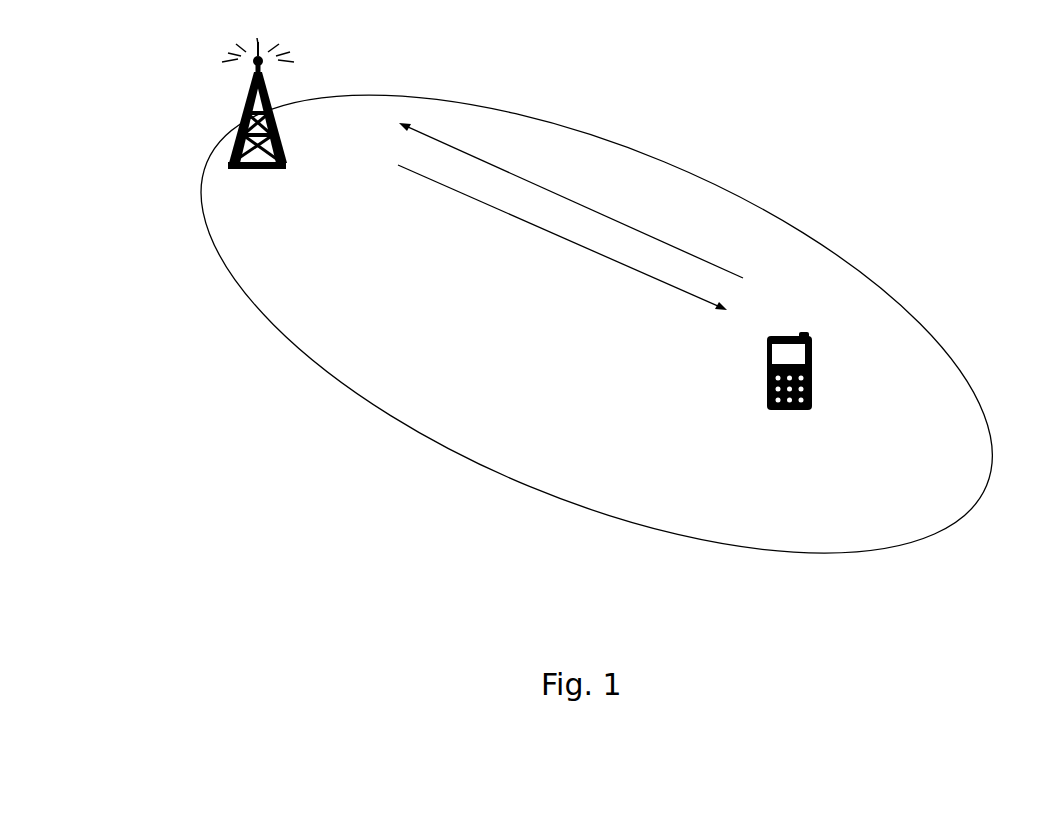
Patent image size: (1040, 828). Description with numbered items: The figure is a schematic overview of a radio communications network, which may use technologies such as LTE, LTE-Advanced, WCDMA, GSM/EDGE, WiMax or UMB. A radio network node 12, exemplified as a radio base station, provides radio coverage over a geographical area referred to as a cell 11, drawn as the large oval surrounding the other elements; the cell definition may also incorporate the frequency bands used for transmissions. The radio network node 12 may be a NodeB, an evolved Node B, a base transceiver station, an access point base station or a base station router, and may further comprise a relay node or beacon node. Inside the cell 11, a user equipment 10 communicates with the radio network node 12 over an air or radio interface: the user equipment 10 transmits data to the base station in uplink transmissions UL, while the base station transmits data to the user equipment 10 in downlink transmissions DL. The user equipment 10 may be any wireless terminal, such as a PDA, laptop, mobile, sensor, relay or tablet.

The user equipment 10 is at (808, 338).
The cell 11 is at (342, 300).
The radio network node 12 is at (237, 158).
The uplink transmissions UL is at (625, 227).
The downlink transmissions DL is at (587, 251).